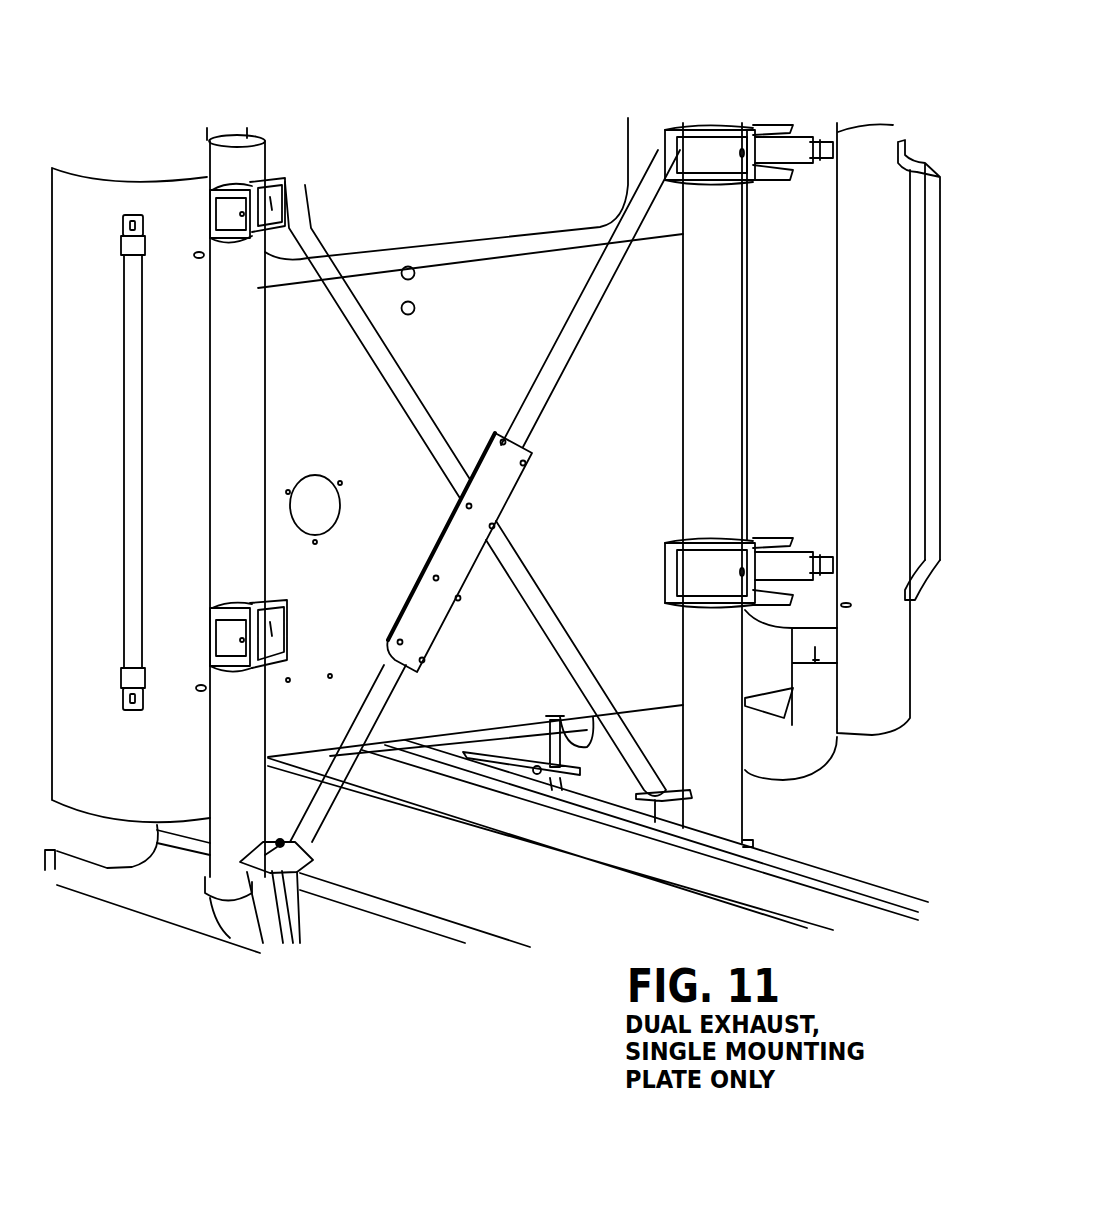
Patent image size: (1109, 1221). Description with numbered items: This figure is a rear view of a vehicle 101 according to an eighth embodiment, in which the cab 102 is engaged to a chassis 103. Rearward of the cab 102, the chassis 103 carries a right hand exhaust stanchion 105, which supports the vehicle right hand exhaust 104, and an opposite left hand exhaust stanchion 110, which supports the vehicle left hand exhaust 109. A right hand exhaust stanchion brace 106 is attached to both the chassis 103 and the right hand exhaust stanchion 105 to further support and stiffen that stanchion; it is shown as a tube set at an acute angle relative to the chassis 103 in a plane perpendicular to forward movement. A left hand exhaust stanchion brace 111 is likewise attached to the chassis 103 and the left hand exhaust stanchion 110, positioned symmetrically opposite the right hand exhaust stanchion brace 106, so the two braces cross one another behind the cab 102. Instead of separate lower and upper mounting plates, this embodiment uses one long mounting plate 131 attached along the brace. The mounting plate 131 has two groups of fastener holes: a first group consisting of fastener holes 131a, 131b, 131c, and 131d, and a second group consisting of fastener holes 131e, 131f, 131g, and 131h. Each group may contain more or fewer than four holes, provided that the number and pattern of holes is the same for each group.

The vehicle 101 is at (526, 275).
The cab 102 is at (481, 290).
The chassis 103 is at (598, 843).
The vehicle right hand exhaust 104 is at (783, 340).
The right hand exhaust stanchion 105 is at (681, 380).
The right hand exhaust stanchion brace 106 is at (541, 370).
The vehicle left hand exhaust 109 is at (214, 410).
The left hand exhaust stanchion 110 is at (230, 571).
The left hand exhaust stanchion brace 111 is at (420, 438).
The mounting plate 131 is at (458, 549).
The fastener hole 131a is at (506, 440).
The fastener hole 131b is at (526, 461).
The fastener hole 131c is at (473, 505).
The fastener hole 131d is at (495, 525).
The fastener hole 131e is at (440, 577).
The fastener hole 131f is at (462, 597).
The fastener hole 131g is at (405, 642).
The fastener hole 131h is at (426, 660).